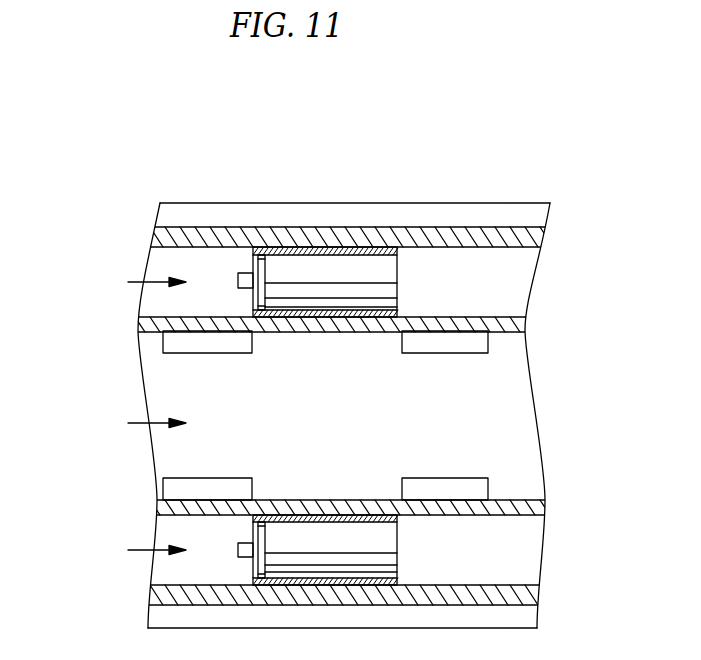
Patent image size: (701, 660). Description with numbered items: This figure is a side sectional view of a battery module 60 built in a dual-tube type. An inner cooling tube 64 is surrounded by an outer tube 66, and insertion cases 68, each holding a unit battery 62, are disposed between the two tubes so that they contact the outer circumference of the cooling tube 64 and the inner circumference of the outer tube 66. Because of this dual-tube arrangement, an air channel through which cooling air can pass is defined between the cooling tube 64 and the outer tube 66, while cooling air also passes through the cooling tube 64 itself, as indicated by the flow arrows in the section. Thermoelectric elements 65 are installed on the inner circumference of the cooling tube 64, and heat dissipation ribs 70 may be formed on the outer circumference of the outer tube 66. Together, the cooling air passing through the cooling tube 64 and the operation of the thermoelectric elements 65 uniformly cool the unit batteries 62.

The battery module 60 is at (343, 381).
The unit battery 62 is at (374, 260).
The cooling tube 64 is at (510, 319).
The thermoelectric element 65 is at (173, 351).
The outer tube 66 is at (497, 232).
The insertion case 68 is at (315, 248).
The heat dissipation rib 70 is at (259, 203).